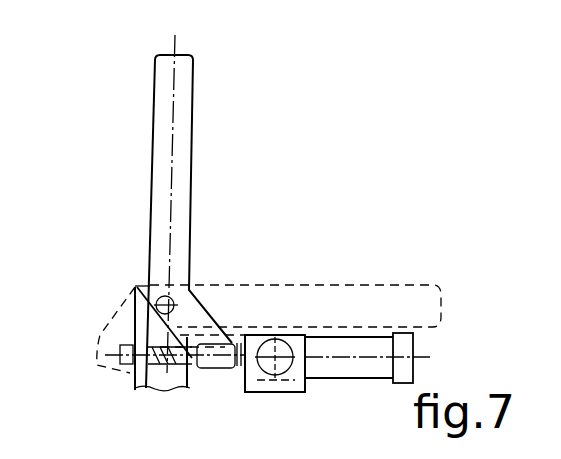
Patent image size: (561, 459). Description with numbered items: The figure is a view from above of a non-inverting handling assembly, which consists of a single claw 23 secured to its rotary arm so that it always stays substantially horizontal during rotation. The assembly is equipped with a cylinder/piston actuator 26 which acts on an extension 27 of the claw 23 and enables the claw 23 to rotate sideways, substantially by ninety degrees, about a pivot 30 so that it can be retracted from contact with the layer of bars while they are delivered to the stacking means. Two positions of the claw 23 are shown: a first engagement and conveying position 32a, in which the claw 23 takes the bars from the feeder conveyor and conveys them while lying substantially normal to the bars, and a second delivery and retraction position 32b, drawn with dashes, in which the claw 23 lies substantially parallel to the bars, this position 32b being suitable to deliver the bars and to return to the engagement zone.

The claw 23 is at (163, 113).
The pivot 30 is at (153, 297).
The extension 27 is at (192, 358).
The cylinder/piston actuator 26 is at (367, 365).
The first engagement and conveying position 32a is at (222, 138).
The second delivery and retraction position 32b is at (437, 283).